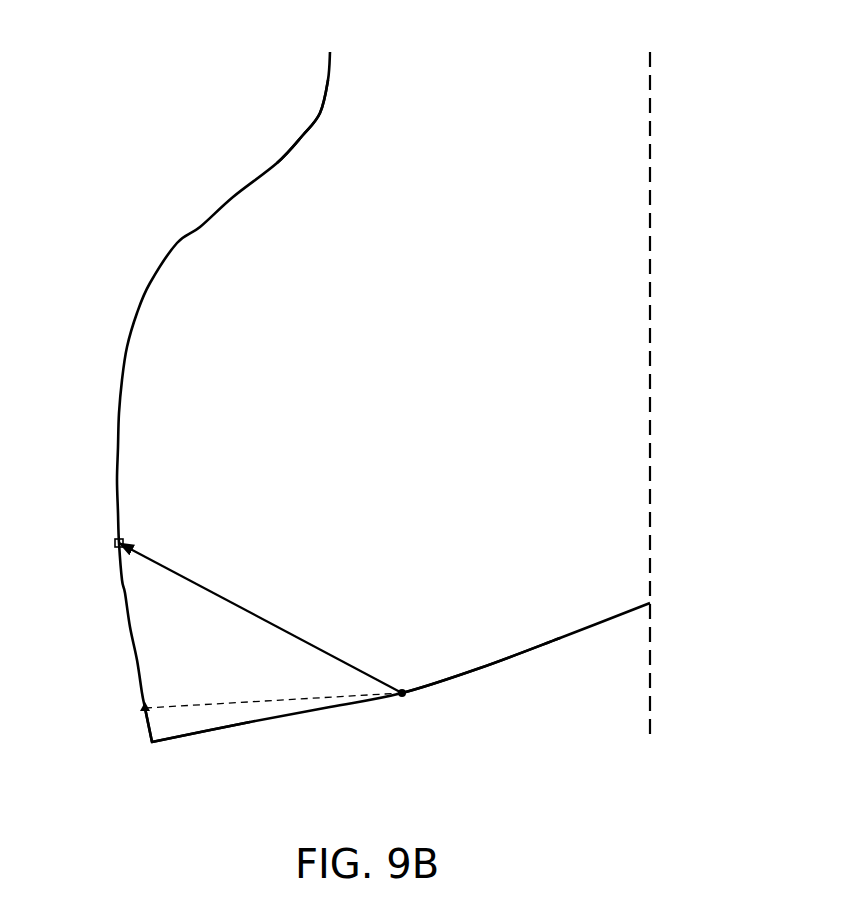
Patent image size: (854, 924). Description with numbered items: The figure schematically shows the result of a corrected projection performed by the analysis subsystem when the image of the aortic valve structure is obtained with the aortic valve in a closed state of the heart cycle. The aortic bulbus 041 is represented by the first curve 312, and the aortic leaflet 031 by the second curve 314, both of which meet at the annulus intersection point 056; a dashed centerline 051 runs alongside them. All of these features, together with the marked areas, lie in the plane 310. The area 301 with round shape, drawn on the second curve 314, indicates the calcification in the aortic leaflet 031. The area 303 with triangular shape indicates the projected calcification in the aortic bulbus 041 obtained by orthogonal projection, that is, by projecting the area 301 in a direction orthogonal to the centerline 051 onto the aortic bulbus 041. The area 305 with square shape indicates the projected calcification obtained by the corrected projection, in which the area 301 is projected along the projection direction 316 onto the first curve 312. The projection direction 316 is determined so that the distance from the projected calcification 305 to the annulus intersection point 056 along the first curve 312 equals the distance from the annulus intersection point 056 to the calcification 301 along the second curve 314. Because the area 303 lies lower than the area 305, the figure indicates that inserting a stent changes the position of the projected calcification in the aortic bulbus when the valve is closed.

The plane 310 is at (505, 112).
The first curve 312 is at (178, 243).
The second curve 314 is at (590, 631).
The projection direction 316 is at (308, 640).
The area with round shape 301 is at (402, 696).
The area with triangular shape 303 is at (143, 708).
The area with square shape 305 is at (115, 543).
The aortic bulbus 041 is at (303, 135).
The aortic leaflet 031 is at (503, 670).
The centerline 051 is at (650, 422).
The annulus intersection point 056 is at (150, 745).